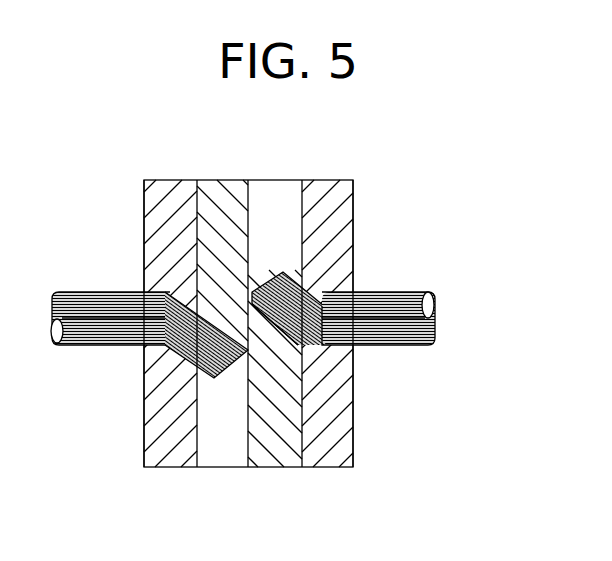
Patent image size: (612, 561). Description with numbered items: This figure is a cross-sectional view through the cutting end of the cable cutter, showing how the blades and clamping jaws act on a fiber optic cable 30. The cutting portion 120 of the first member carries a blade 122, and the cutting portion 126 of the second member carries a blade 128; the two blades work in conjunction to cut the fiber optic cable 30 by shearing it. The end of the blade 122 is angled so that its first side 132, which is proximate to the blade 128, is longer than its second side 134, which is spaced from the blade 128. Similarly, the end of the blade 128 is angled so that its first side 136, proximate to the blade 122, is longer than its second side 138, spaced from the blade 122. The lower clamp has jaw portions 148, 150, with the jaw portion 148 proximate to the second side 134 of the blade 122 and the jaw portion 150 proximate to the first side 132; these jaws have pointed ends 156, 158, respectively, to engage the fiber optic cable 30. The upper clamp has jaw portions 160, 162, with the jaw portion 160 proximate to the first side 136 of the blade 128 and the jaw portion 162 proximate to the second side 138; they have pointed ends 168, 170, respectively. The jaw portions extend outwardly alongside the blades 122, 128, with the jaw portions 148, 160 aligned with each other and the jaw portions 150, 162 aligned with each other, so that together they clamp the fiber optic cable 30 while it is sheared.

The fiber optic cable 30 is at (407, 290).
The cutting portion 120 is at (268, 445).
The blade 122 is at (322, 357).
The cutting portion 126 is at (222, 205).
The blade 128 is at (208, 284).
The first side 132 is at (245, 410).
The second side 134 is at (305, 468).
The first side 136 is at (262, 218).
The second side 138 is at (206, 216).
The jaw portion 148 is at (315, 413).
The jaw portion 150 is at (155, 428).
The pointed end 156 is at (323, 342).
The pointed end 158 is at (158, 350).
The jaw portion 160 is at (327, 213).
The jaw portion 162 is at (196, 248).
The pointed end 168 is at (330, 293).
The pointed end 170 is at (162, 292).